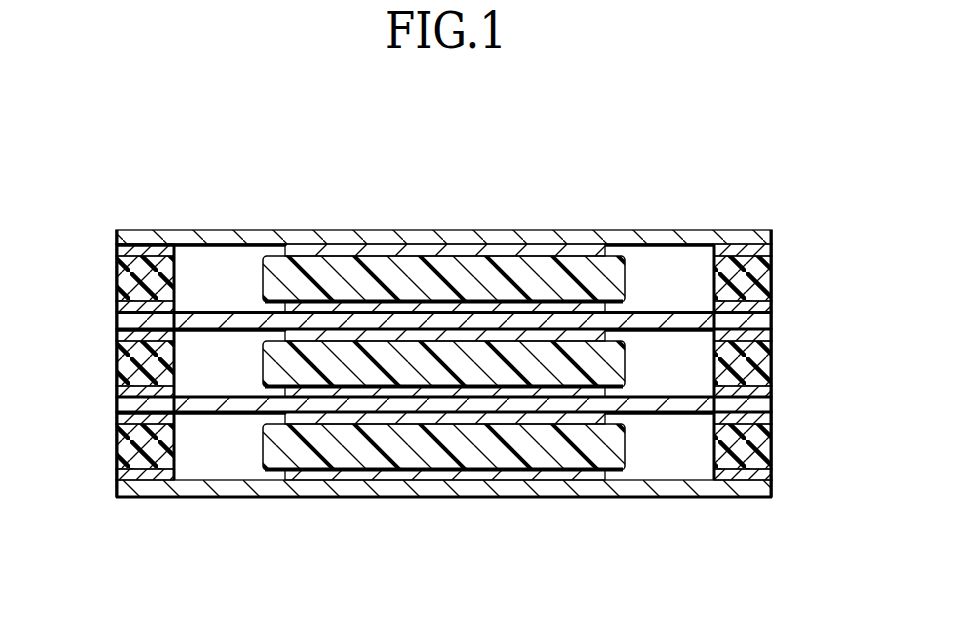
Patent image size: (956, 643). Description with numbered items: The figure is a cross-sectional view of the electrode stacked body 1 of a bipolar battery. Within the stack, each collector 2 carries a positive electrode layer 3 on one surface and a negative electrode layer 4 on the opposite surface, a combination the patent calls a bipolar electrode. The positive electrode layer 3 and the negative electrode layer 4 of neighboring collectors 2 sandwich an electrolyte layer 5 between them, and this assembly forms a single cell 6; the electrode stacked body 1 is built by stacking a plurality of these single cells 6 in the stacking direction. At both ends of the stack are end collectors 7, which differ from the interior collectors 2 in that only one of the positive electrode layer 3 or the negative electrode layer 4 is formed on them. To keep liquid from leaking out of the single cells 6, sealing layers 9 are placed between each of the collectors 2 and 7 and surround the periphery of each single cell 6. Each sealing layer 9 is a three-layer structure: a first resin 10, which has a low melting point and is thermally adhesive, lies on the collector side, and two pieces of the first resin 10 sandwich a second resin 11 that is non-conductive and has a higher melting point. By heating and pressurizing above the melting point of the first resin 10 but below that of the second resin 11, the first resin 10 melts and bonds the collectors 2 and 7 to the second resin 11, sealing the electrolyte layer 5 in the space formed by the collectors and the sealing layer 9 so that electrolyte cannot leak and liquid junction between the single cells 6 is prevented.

The electrode stacked body 1 is at (452, 351).
The collector 2 is at (415, 329).
The positive electrode layer 3 is at (346, 365).
The negative electrode layer 4 is at (337, 365).
The electrolyte layer 5 is at (347, 365).
The single cell 6 is at (324, 365).
The end collector 7 is at (444, 336).
The sealing layer 9 is at (498, 341).
The first resin 10 is at (476, 368).
The second resin 11 is at (476, 363).